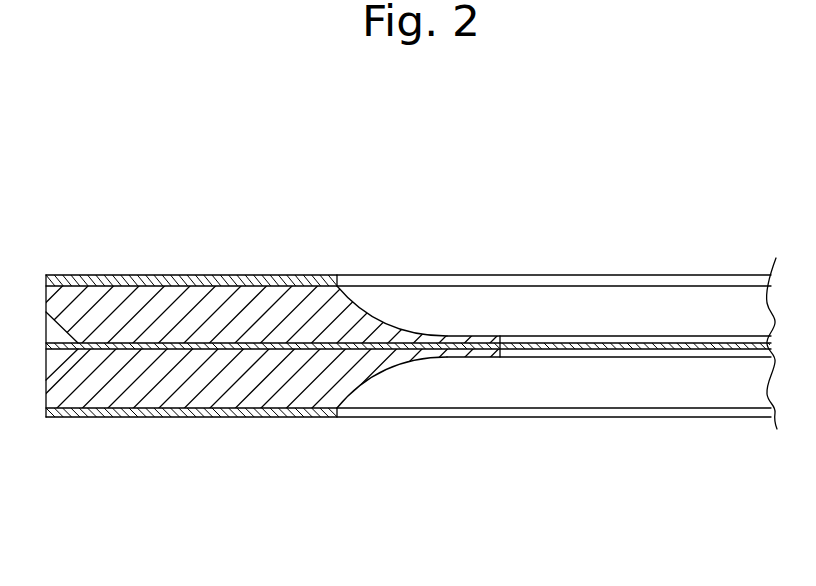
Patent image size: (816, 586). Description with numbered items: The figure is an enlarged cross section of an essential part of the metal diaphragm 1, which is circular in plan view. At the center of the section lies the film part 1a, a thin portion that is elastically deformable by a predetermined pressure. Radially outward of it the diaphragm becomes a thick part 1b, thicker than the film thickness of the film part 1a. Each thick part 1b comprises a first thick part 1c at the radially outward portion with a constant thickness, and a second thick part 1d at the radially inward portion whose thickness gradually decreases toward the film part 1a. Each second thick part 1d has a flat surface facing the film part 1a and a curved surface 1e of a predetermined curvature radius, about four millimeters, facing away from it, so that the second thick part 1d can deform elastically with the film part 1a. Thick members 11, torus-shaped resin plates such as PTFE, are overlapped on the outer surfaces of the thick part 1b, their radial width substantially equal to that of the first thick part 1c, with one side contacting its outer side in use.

The metal diaphragm 1 is at (474, 208).
The film part 1a is at (562, 342).
The thick part 1b is at (300, 346).
The first thick part 1c is at (242, 295).
The second thick part 1d is at (365, 320).
The curved surface 1e is at (397, 310).
The thick member 11 is at (133, 275).